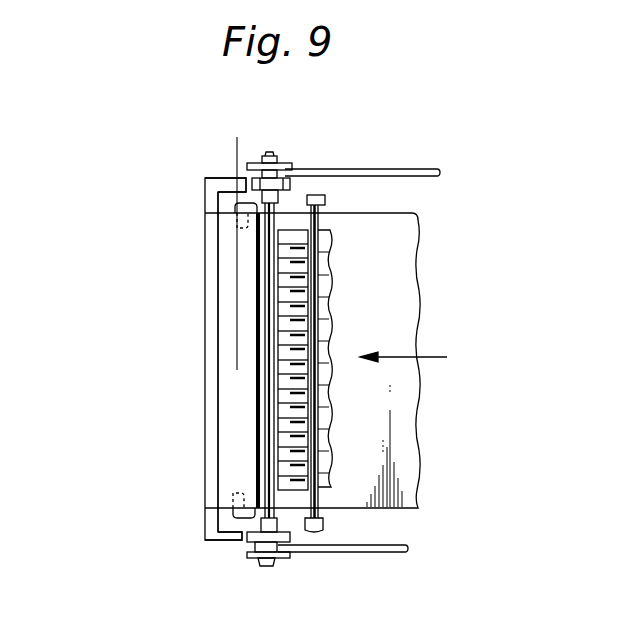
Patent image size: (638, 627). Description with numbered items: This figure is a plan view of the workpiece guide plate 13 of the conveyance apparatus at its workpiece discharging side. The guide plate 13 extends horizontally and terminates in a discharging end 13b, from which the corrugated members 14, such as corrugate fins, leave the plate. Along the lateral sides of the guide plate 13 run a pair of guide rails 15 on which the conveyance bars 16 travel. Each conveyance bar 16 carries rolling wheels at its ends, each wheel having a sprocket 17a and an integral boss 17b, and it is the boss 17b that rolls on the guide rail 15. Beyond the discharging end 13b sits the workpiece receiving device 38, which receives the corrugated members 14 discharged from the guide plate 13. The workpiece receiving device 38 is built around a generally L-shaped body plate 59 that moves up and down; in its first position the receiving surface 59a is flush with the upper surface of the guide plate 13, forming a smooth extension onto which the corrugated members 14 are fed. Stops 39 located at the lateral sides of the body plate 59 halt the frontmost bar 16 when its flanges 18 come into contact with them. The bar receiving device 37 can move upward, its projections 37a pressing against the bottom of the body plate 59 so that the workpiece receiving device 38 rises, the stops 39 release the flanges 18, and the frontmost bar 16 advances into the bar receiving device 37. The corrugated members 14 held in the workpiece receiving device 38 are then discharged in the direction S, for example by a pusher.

The workpiece guide plate 13 is at (412, 418).
The discharging end 13b is at (258, 333).
The corrugated members 14 is at (293, 297).
The guide rails 15 is at (388, 172).
The conveyance bars 16 is at (272, 228).
The sprocket 17a is at (295, 168).
The boss 17b is at (277, 162).
The flanges 18 is at (248, 158).
The bar receiving device 37 is at (236, 207).
The projections 37a is at (233, 220).
The workpiece receiving device 38 is at (211, 457).
The stops 39 is at (222, 176).
The body plate 59 is at (210, 402).
The receiving surface 59a is at (233, 425).
The direction S is at (235, 266).